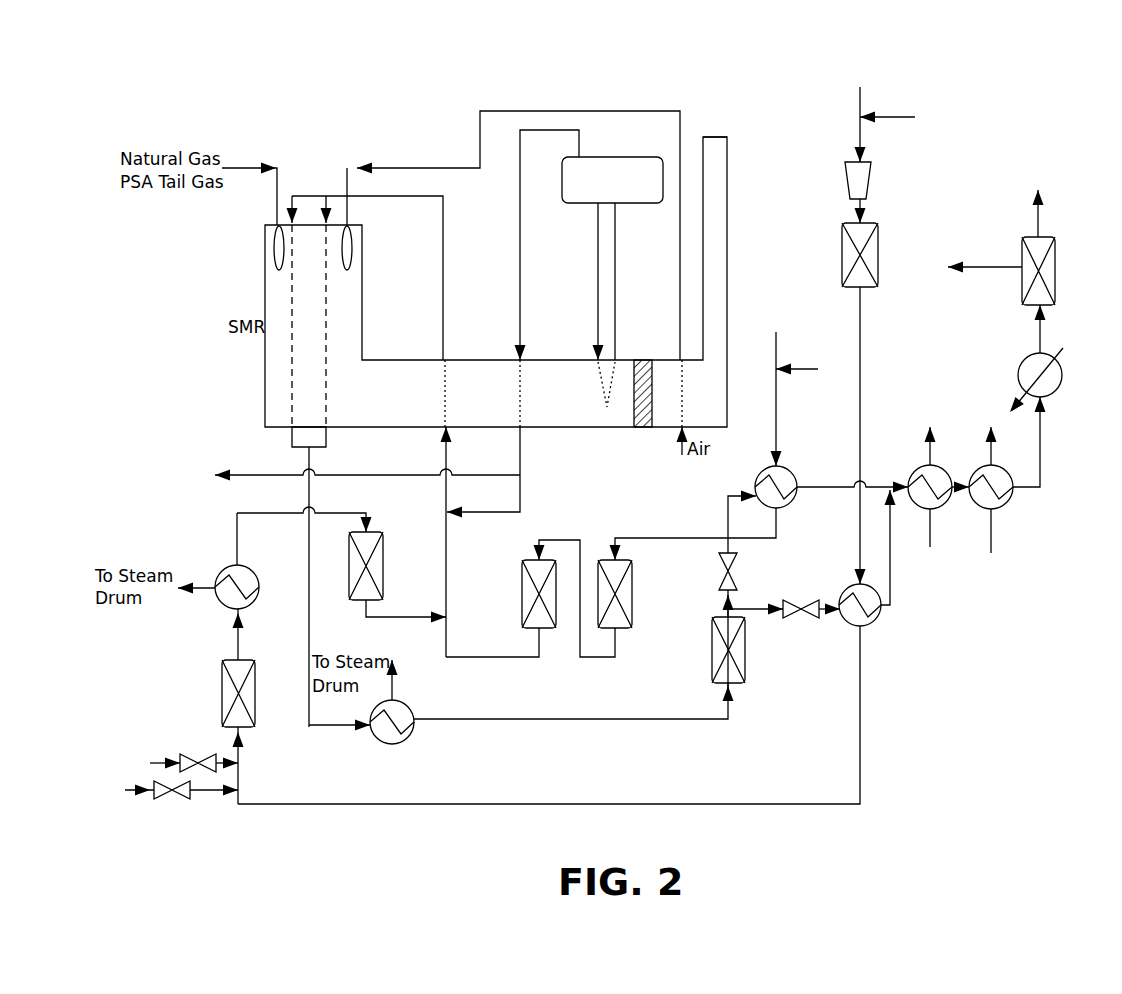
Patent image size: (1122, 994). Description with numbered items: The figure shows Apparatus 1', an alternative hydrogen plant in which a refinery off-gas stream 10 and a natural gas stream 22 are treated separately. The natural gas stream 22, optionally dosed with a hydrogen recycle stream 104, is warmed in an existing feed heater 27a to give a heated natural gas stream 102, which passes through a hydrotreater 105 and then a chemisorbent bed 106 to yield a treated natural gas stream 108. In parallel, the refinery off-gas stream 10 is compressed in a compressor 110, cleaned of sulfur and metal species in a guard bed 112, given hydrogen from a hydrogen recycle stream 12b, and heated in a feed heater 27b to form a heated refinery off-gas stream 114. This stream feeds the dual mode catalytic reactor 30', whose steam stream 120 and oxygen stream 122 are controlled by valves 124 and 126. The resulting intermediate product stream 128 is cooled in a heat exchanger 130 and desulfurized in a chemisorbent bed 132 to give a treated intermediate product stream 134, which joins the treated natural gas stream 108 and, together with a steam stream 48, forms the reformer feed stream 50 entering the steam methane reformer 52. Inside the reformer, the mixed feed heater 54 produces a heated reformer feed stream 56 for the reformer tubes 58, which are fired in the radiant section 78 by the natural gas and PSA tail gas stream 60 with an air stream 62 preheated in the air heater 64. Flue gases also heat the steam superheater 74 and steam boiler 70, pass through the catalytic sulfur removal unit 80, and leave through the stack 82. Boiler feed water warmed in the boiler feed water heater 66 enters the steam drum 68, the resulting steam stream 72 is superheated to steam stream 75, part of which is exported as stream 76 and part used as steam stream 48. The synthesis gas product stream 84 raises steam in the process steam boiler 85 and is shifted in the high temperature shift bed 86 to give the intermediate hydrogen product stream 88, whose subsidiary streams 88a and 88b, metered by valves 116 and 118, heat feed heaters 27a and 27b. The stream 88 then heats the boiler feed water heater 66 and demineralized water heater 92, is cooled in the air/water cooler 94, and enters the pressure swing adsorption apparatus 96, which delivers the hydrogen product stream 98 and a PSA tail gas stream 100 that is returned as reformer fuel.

The apparatus 1' is at (997, 95).
The refinery off-gas stream 10 is at (856, 95).
The hydrogen recycle stream 12b is at (898, 115).
The natural gas stream 22 is at (778, 352).
The feed heater 27a is at (783, 481).
The feed heater 27b is at (876, 620).
The dual mode catalytic reactor 30' is at (218, 693).
The steam stream 48 is at (468, 512).
The reformer feed stream 50 is at (441, 455).
The steam methane reformer 52 is at (245, 408).
The mixed feed heater 54 is at (447, 365).
The heated reformer feed stream 56 is at (443, 285).
The reformer tubes 58 is at (326, 350).
The natural gas and PSA tail gas stream 60 is at (245, 166).
The air stream 62 is at (389, 166).
The air heater 64 is at (686, 358).
The boiler feed water heater 66 is at (940, 474).
The steam drum 68 is at (578, 205).
The steam boiler 70 is at (617, 357).
The steam stream 72 is at (522, 294).
The steam superheater 74 is at (522, 382).
The steam stream 75 is at (522, 458).
The stream 76 is at (255, 477).
The radiant section 78 is at (275, 295).
The catalytic sulfur removal unit 80 is at (640, 428).
The stack 82 is at (718, 230).
The synthesis gas product stream 84 is at (312, 720).
The process steam boiler 85 is at (405, 744).
The high temperature shift bed 86 is at (738, 682).
The intermediate hydrogen product stream 88 is at (728, 609).
The subsidiary intermediate hydrogen product stream 88a is at (728, 518).
The subsidiary intermediate hydrogen product stream 88b is at (752, 608).
The demineralized water heater 92 is at (1006, 500).
The air/water cooler 94 is at (1050, 390).
The pressure swing adsorption apparatus 96 is at (1045, 295).
The hydrogen product stream 98 is at (1040, 222).
The PSA tail gas stream 100 is at (985, 269).
The heated natural gas stream 102 is at (658, 540).
The hydrogen recycle stream 104 is at (805, 372).
The hydrotreater 105 is at (626, 625).
The chemisorbent bed 106 is at (543, 625).
The treated natural gas stream 108 is at (482, 659).
The compressor 110 is at (868, 182).
The guard bed 112 is at (872, 290).
The heated refinery off-gas stream 114 is at (350, 808).
The valve 116 is at (736, 581).
The valve 118 is at (809, 600).
The steam stream 120 is at (201, 800).
The oxygen stream 122 is at (218, 759).
The valve 124 is at (165, 803).
The valve 126 is at (187, 752).
The intermediate product stream 128 is at (240, 650).
The heat exchanger 130 is at (243, 578).
The chemisorbent bed 132 is at (378, 566).
The treated intermediate product stream 134 is at (393, 615).